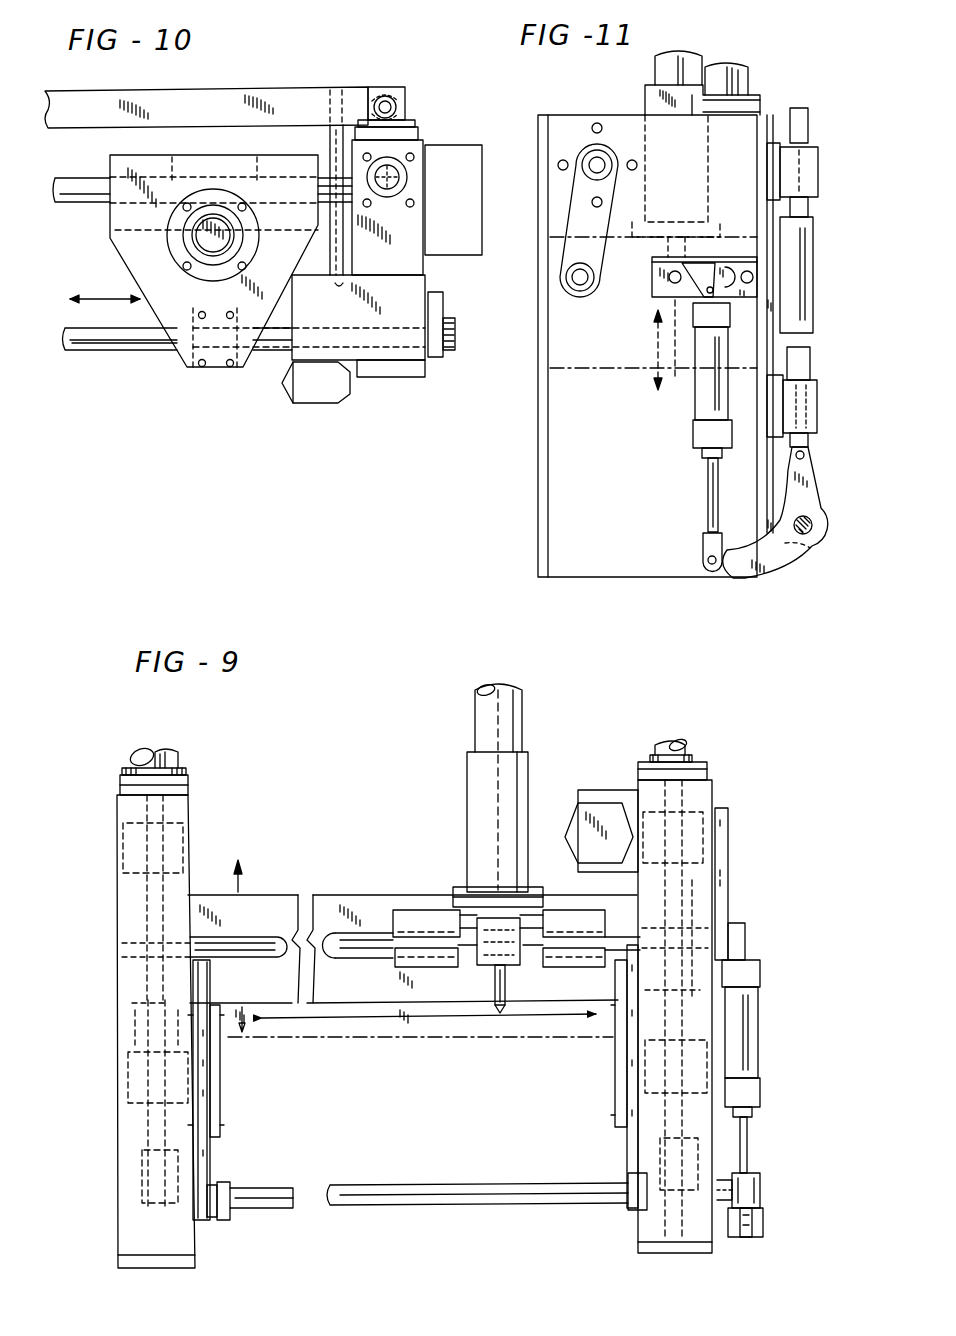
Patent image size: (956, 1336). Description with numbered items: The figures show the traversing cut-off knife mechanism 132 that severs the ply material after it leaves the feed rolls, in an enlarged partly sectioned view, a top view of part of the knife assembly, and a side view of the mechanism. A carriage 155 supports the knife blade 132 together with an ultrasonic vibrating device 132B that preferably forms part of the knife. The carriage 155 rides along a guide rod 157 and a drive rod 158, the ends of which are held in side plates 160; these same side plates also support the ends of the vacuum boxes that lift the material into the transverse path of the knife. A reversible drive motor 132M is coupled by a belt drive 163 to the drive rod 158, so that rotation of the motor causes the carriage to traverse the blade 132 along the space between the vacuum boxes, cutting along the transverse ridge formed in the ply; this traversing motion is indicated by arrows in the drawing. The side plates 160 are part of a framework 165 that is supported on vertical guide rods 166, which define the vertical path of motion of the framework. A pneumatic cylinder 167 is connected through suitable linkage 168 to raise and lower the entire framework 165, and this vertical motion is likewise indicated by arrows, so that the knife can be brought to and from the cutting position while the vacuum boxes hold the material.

In FIG. 11, the cut-off knife 132 is at (675, 377).
In FIG. 9, the cut-off knife 132 is at (493, 1012).
In FIG. 10, the ultrasonic vibrating device 132B is at (195, 238).
In FIG. 11, the ultrasonic vibrating device 132B is at (657, 100).
In FIG. 9, the ultrasonic vibrating device 132B is at (477, 785).
In FIG. 10, the reversible drive motor 132M is at (345, 335).
In FIG. 10, the carriage 155 is at (152, 272).
In FIG. 9, the carriage 155 is at (440, 963).
In FIG. 10, the guide rod 157 is at (103, 185).
In FIG. 9, the guide rod 157 is at (347, 907).
In FIG. 10, the drive rod 158 is at (128, 343).
In FIG. 9, the drive rod 158 is at (370, 942).
In FIG. 11, the side plates 160 is at (570, 333).
In FIG. 9, the side plates 160 is at (723, 912).
In FIG. 10, the belt drive 163 is at (435, 322).
In FIG. 11, the belt drive 163 is at (567, 210).
In FIG. 9, the framework 165 is at (347, 985).
In FIG. 10, the vertical guide rods 166 is at (393, 101).
In FIG. 11, the vertical guide rods 166 is at (800, 108).
In FIG. 9, the vertical guide rods 166 is at (133, 1037).
In FIG. 11, the pneumatic cylinder 167 is at (700, 395).
In FIG. 9, the pneumatic cylinder 167 is at (750, 1063).
In FIG. 11, the linkage 168 is at (690, 550).
In FIG. 9, the linkage 168 is at (760, 1170).